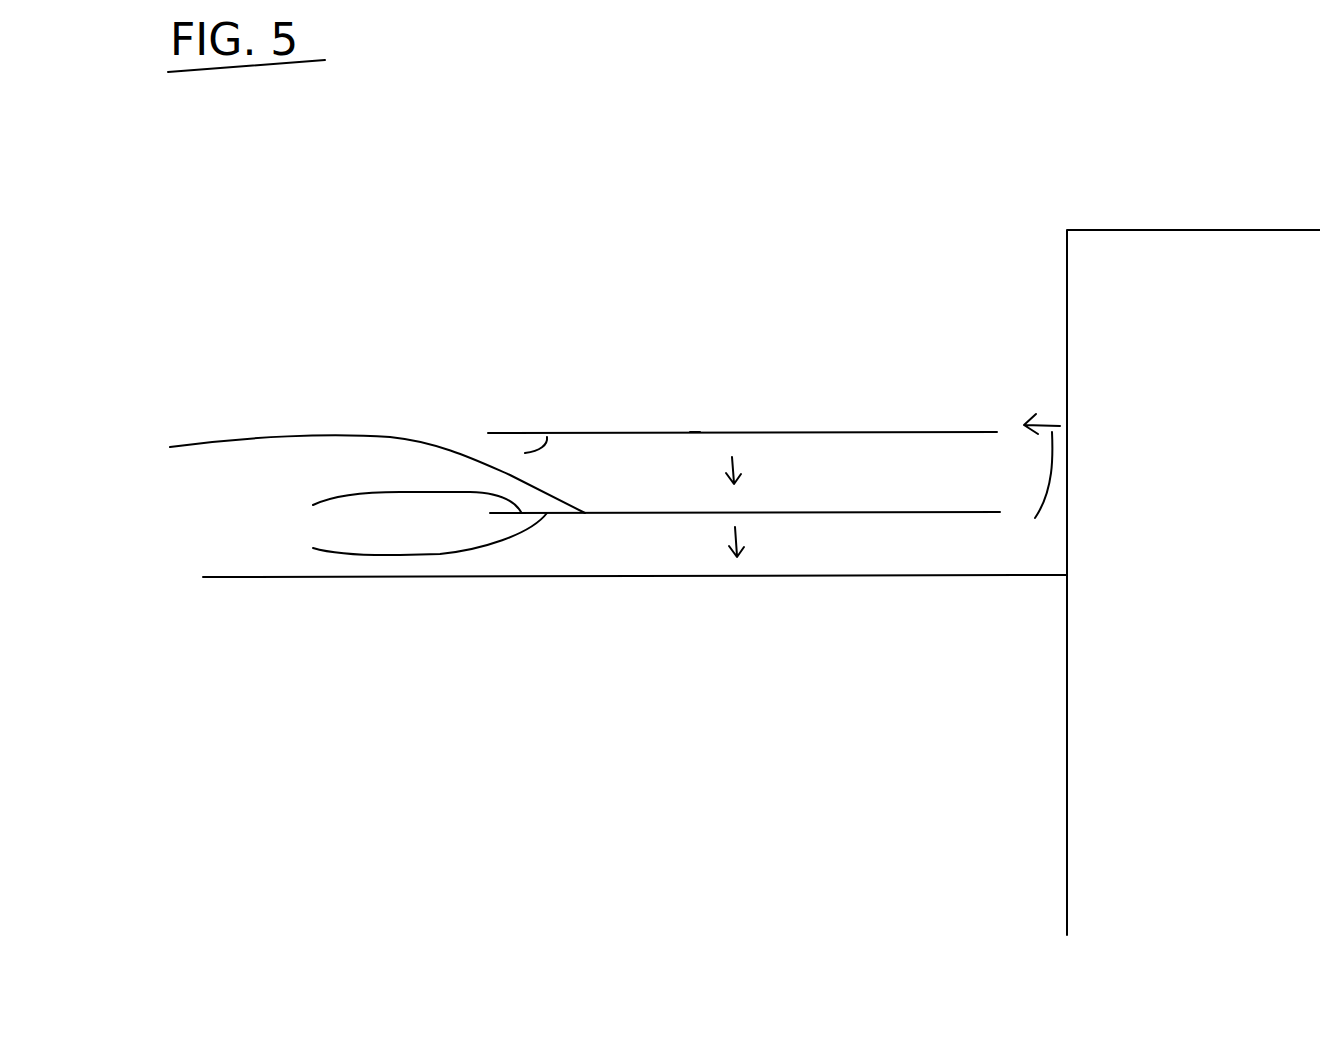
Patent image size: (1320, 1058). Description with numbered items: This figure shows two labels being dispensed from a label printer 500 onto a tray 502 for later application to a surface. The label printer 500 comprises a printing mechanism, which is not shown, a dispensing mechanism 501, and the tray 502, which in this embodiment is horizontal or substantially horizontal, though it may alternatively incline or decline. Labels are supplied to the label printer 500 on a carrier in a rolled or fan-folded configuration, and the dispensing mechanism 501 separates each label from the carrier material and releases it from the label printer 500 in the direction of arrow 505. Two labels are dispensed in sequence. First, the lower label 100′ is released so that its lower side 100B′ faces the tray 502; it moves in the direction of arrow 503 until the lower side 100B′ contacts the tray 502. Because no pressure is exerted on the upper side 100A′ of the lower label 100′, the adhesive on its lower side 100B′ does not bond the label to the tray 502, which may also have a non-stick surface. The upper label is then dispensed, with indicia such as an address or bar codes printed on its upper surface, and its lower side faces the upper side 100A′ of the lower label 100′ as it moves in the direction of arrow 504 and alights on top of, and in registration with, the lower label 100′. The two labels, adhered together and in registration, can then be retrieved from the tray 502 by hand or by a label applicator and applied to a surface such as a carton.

The lower label 100′ is at (545, 471).
The upper side of lower label 100A′ is at (325, 512).
The lower side of lower label 100B′ is at (379, 540).
The label printer 500 is at (1193, 582).
The dispensing mechanism 501 is at (1068, 420).
The tray 502 is at (560, 576).
The arrow 503 is at (750, 539).
The arrow 504 is at (747, 466).
The arrow 505 is at (1034, 495).